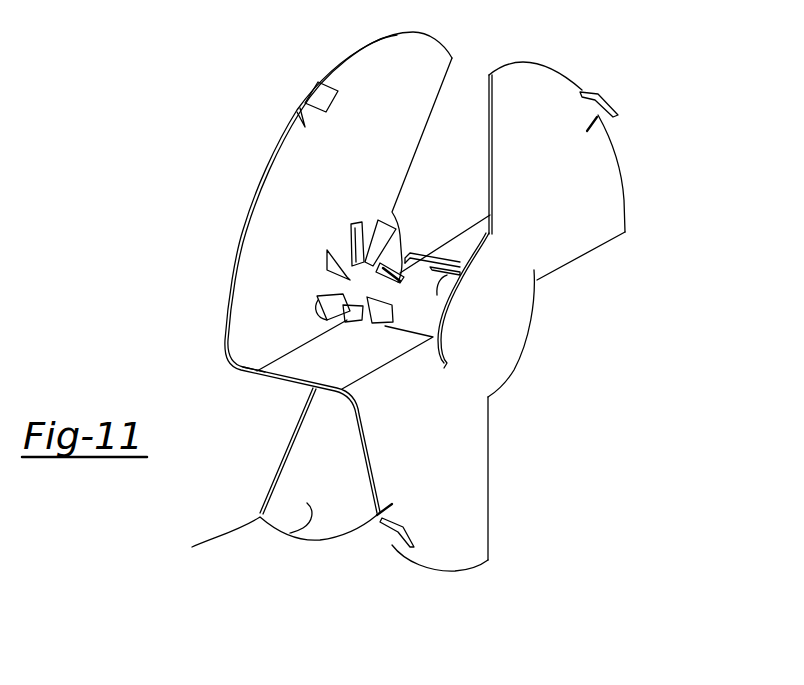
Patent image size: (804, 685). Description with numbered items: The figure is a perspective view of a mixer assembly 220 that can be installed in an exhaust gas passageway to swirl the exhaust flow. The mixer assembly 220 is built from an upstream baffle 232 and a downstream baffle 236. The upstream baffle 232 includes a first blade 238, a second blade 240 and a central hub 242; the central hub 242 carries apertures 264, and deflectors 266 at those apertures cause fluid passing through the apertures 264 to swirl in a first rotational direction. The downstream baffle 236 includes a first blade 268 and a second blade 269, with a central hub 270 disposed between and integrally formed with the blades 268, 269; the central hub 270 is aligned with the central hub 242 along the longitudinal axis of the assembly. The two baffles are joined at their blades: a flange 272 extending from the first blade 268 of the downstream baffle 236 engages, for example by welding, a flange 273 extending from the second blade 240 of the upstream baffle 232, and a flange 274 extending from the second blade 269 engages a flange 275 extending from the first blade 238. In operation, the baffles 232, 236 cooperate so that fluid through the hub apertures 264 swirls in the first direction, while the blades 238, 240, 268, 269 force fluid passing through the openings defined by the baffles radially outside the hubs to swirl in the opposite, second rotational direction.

The mixer assembly 220 is at (556, 48).
The upstream baffle 232 is at (226, 255).
The downstream baffle 236 is at (630, 182).
The first blade 238 is at (415, 55).
The second blade 240 is at (85, 0).
The central hub 242 is at (400, 243).
The apertures 264 is at (363, 222).
The deflectors 266 is at (356, 243).
The first blade 268 is at (530, 78).
The second blade 269 is at (463, 480).
The central hub 270 is at (493, 355).
The flange 272 is at (462, 308).
The flange 273 is at (470, 237).
The flange 274 is at (290, 358).
The flange 275 is at (270, 378).